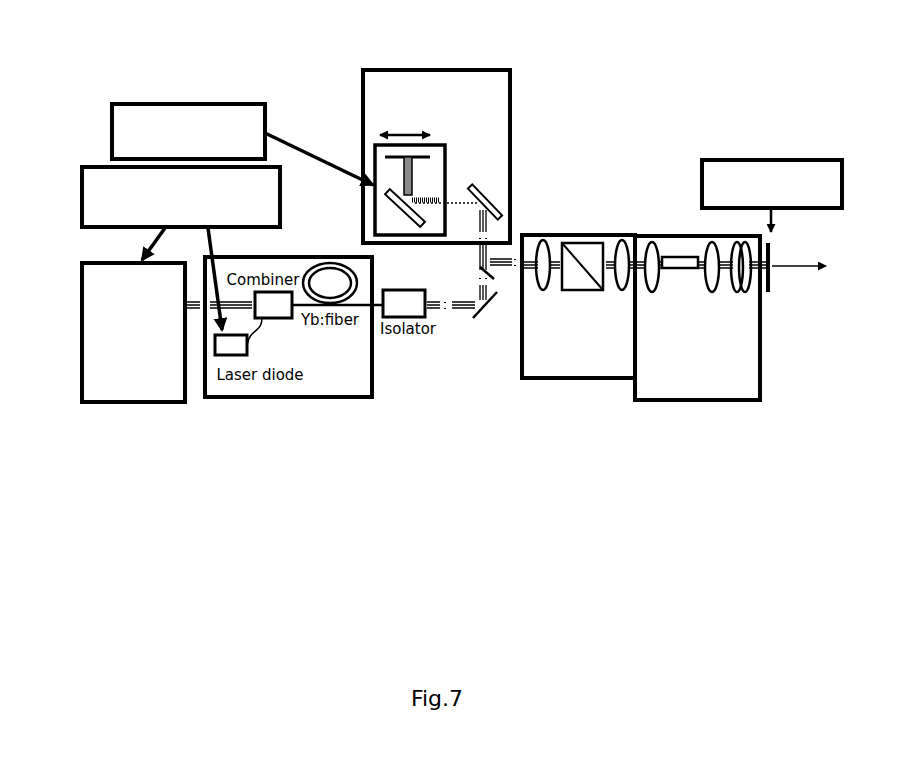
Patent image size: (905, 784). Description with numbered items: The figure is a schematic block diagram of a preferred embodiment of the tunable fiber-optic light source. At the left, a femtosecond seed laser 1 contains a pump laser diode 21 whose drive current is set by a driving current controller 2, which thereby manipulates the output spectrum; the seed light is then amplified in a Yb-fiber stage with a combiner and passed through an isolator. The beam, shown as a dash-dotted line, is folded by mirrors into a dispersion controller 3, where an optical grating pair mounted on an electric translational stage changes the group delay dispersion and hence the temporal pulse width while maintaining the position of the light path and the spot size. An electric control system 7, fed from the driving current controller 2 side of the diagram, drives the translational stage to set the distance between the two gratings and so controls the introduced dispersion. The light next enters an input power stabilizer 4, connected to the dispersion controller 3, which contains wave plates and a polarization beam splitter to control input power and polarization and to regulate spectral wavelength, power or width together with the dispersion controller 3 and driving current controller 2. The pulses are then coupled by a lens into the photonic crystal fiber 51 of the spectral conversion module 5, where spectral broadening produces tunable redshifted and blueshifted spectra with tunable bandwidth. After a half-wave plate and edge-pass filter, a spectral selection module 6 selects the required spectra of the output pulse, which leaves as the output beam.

The femtosecond seed laser 1 is at (82, 315).
The driving current controller 2 is at (82, 185).
The pump laser diode 21 is at (230, 345).
The dispersion controller 3 is at (387, 70).
The input power stabilizer 4 is at (610, 235).
The spectral conversion module 5 is at (734, 276).
The photonic crystal fiber 51 is at (682, 257).
The spectral selection module 6 is at (750, 160).
The electric control system 7 is at (112, 112).